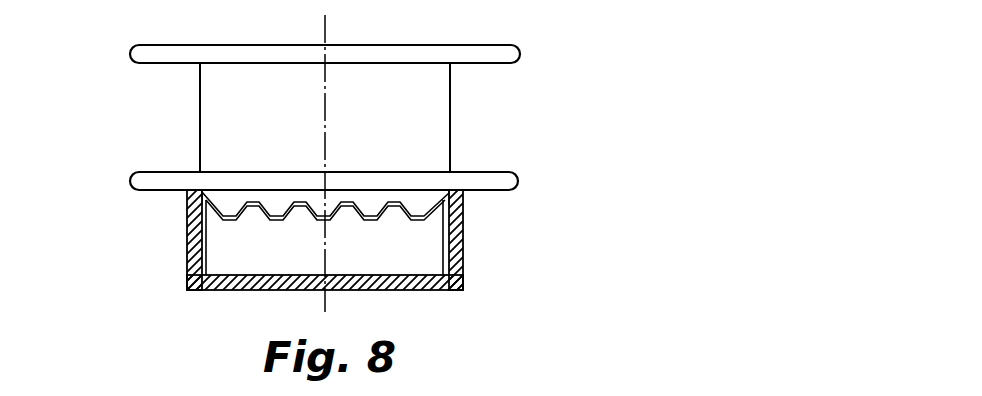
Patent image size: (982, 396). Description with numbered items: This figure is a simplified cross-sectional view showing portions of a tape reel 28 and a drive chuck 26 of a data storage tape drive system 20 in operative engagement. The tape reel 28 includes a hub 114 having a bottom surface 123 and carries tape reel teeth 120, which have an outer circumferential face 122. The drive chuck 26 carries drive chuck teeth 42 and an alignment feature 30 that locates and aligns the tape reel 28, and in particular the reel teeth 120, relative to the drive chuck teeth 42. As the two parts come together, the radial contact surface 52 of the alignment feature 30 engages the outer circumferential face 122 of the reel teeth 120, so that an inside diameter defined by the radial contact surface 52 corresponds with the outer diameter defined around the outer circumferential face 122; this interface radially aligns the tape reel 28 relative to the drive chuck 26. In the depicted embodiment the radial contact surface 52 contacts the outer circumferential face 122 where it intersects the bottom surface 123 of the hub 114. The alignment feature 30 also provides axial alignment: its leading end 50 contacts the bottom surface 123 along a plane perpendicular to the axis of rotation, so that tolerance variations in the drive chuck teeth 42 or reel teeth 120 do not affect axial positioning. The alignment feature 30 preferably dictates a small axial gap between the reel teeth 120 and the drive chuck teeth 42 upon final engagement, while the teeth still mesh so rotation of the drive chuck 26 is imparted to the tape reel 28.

The data storage tape drive system 20 is at (537, 32).
The tape reel 28 is at (136, 103).
The hub 114 is at (437, 91).
The bottom surface 123 is at (498, 193).
The leading end 50 is at (453, 196).
The radial contact surface 52 is at (200, 189).
The tape reel teeth 120 is at (373, 196).
The alignment feature 30 is at (466, 248).
The outer circumferential face 122 is at (186, 222).
The drive chuck 26 is at (171, 288).
The drive chuck teeth 42 is at (396, 225).